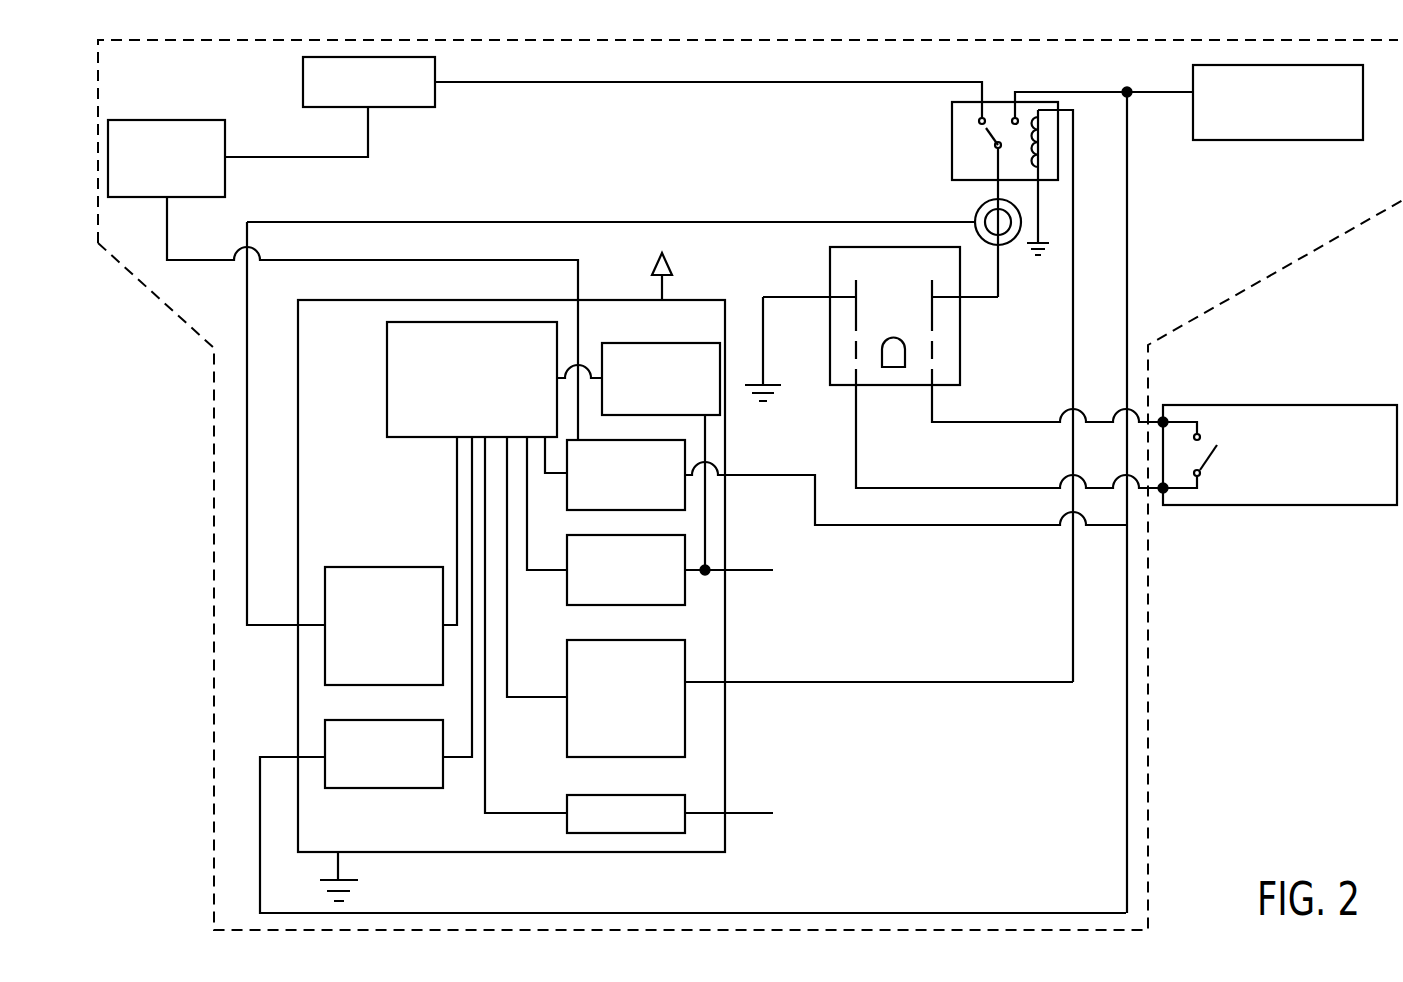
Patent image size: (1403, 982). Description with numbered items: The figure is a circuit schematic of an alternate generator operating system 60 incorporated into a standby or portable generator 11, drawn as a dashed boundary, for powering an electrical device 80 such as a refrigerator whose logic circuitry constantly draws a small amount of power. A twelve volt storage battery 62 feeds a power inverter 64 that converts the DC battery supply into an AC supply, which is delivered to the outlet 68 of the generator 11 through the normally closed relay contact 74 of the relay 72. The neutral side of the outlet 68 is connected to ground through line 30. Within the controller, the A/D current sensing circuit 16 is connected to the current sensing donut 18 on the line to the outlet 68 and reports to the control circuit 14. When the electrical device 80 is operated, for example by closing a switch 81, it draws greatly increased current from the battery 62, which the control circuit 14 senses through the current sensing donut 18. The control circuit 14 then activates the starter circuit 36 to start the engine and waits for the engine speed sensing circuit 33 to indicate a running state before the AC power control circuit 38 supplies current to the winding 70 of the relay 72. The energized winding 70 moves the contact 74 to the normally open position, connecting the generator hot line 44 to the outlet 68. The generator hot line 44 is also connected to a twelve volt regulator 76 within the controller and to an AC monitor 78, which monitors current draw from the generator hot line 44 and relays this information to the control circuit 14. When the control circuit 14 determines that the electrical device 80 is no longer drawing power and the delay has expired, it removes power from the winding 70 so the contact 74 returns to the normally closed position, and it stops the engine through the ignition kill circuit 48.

The generator 11 is at (214, 640).
The control circuit 14 is at (387, 380).
The A/D current sensing circuit 16 is at (325, 650).
The current sensing donut 18 is at (1012, 243).
The line 30 is at (763, 342).
The engine speed sensing circuit 33 is at (640, 343).
The starter circuit 36 is at (685, 800).
The AC power control circuit 38 is at (685, 668).
The generator hot line 44 is at (1278, 140).
The ignition kill circuit 48 is at (567, 590).
The generator operating system 60 is at (615, 184).
The twelve volt storage battery 62 is at (167, 120).
The power inverter 64 is at (403, 107).
The outlet 68 is at (960, 315).
The winding 70 is at (1040, 143).
The relay 72 is at (952, 130).
The normally closed relay contact 74 is at (988, 130).
The twelve volt regulator 76 is at (672, 440).
The AC monitor 78 is at (325, 733).
The electrical device 80 is at (1280, 405).
The switch 81 is at (1212, 462).